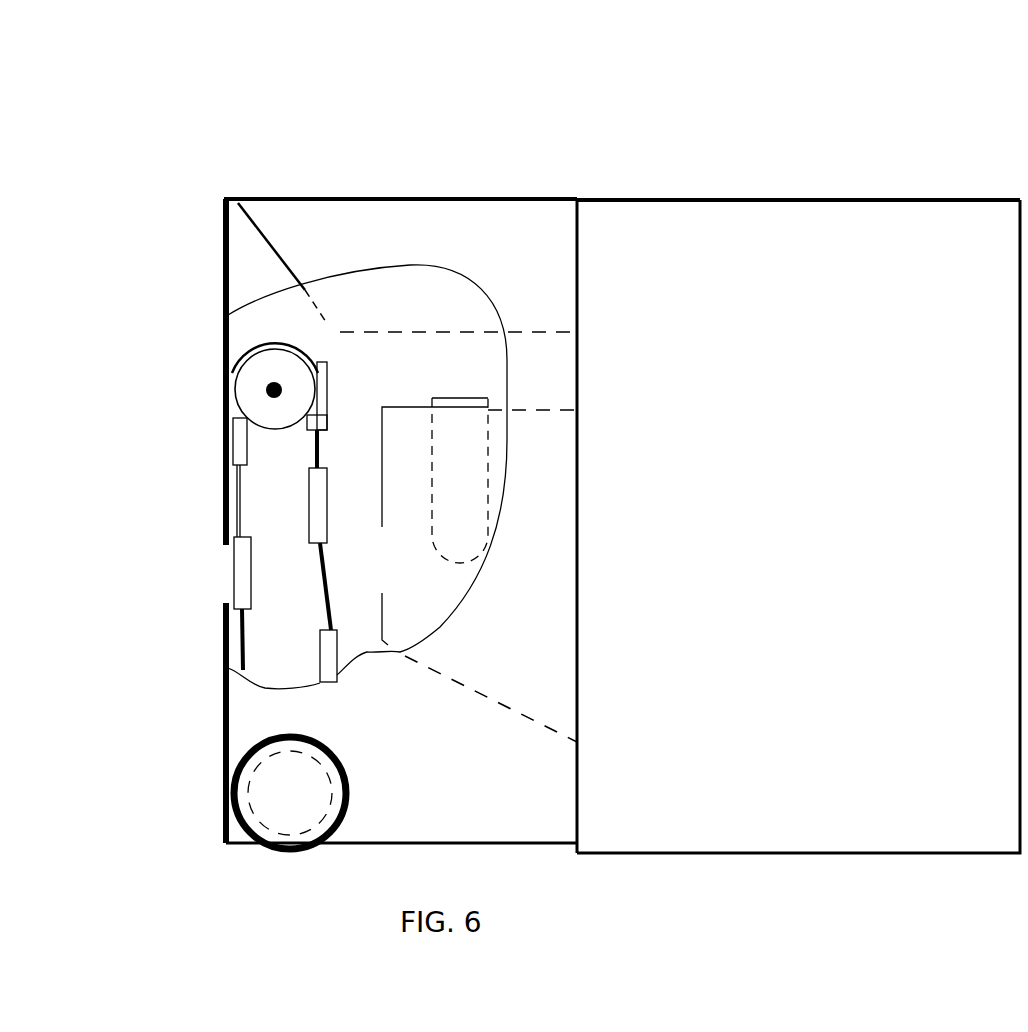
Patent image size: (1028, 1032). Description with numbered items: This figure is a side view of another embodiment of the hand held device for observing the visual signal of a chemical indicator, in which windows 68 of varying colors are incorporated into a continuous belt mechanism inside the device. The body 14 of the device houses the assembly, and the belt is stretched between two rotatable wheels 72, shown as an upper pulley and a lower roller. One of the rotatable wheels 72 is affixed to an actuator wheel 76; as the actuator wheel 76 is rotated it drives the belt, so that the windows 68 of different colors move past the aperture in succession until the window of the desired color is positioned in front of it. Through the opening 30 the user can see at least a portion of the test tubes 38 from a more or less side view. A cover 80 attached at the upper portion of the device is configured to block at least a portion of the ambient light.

The body 14 is at (643, 253).
The opening 30 is at (380, 578).
The test tubes 38 is at (487, 490).
The windows 68 is at (233, 572).
The rotatable wheels 72 is at (252, 363).
The actuator wheel 76 is at (230, 778).
The cover 80 is at (395, 198).